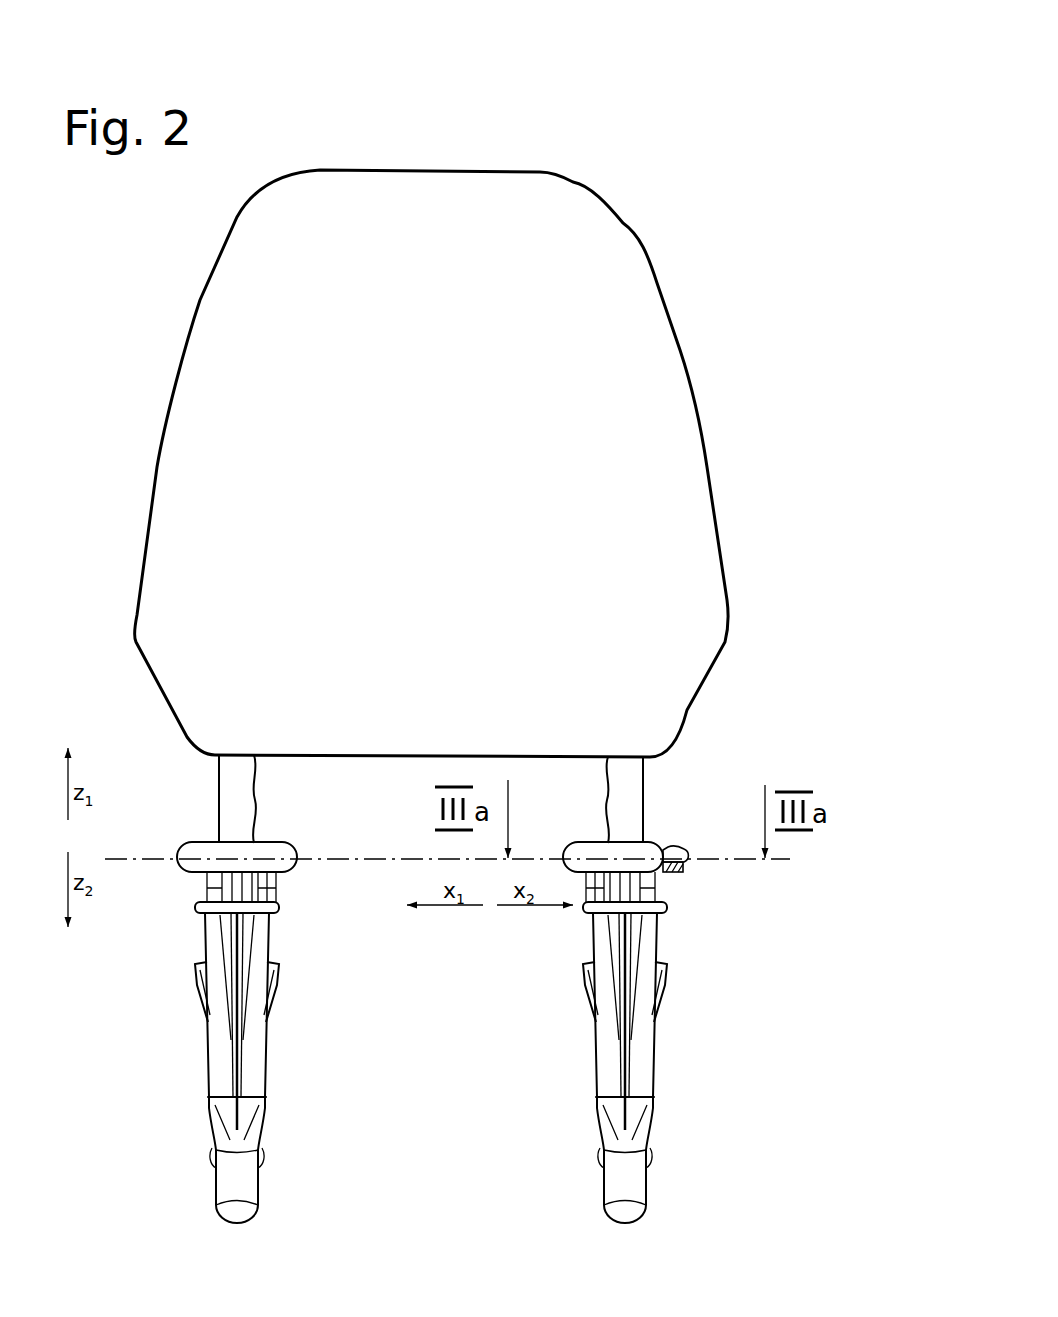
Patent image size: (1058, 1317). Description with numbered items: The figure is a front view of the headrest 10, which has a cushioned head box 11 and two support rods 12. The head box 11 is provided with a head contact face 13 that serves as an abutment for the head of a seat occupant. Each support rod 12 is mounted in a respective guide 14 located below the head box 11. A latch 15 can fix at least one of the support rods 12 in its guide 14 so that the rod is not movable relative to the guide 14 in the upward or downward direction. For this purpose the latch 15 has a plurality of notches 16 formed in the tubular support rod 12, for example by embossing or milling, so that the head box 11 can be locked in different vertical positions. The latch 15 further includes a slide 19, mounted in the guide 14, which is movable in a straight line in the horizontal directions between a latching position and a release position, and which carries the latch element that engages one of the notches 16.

The headrest 10 is at (439, 612).
The head box 11 is at (625, 345).
The support rod 12 is at (232, 1183).
The head contact face 13 is at (455, 442).
The guide 14 is at (218, 1028).
The latch 15 is at (683, 868).
The notch 16 is at (258, 798).
The slide 19 is at (685, 848).